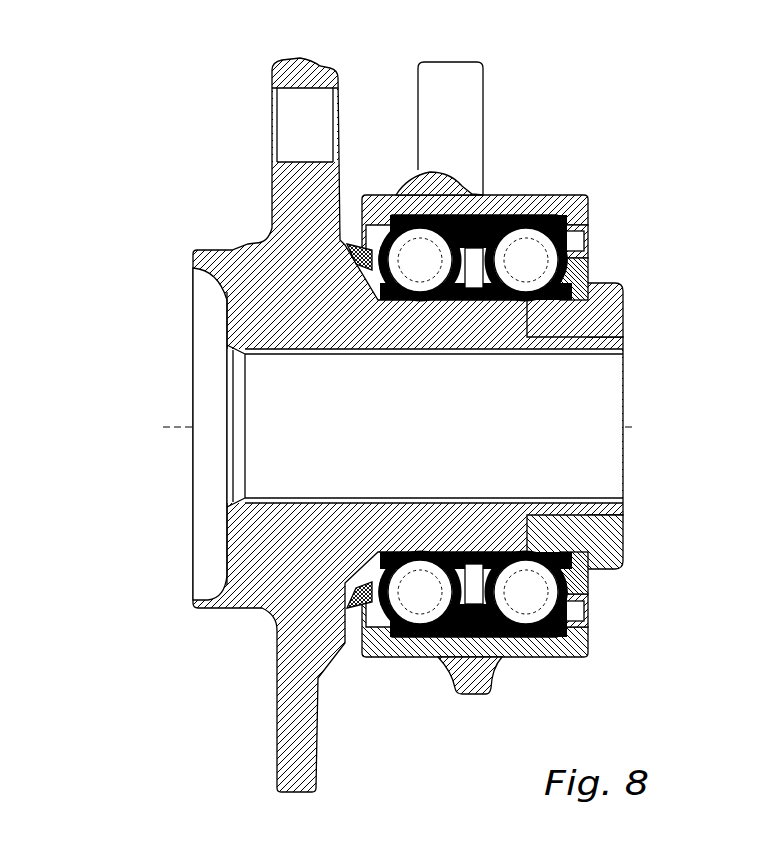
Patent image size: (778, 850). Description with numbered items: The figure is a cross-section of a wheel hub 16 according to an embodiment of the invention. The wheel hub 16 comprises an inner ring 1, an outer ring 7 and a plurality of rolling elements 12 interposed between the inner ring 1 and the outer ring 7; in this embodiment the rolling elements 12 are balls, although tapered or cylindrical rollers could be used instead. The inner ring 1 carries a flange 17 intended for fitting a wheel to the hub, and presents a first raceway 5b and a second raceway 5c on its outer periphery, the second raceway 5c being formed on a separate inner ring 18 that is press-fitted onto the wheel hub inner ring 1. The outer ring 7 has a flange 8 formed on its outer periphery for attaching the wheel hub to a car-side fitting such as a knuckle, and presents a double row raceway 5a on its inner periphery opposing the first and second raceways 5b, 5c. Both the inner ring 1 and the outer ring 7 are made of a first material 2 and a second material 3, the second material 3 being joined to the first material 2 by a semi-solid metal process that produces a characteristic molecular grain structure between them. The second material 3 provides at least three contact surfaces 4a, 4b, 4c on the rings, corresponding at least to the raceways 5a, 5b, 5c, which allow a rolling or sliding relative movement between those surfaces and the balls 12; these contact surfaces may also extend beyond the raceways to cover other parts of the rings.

The inner ring 1 is at (248, 337).
The first material 2 is at (404, 194).
The second material 3 is at (565, 196).
The contact surface 4a is at (412, 206).
The contact surface 4b is at (378, 325).
The contact surface 4c is at (565, 293).
The double row raceway 5a is at (476, 248).
The first raceway 5b is at (425, 301).
The second raceway 5c is at (555, 298).
The outer ring 7 is at (526, 210).
The flange 8 is at (470, 84).
The rolling elements 12 is at (600, 300).
The wheel hub 16 is at (140, 90).
The flange 17 is at (279, 71).
The separate inner ring 18 is at (590, 268).